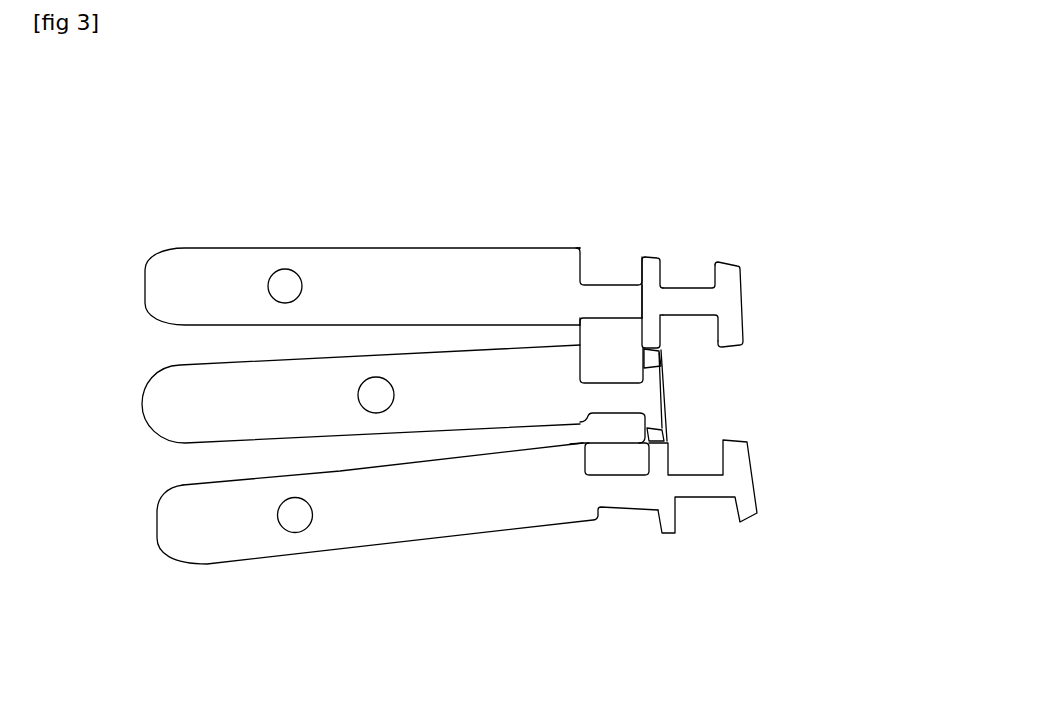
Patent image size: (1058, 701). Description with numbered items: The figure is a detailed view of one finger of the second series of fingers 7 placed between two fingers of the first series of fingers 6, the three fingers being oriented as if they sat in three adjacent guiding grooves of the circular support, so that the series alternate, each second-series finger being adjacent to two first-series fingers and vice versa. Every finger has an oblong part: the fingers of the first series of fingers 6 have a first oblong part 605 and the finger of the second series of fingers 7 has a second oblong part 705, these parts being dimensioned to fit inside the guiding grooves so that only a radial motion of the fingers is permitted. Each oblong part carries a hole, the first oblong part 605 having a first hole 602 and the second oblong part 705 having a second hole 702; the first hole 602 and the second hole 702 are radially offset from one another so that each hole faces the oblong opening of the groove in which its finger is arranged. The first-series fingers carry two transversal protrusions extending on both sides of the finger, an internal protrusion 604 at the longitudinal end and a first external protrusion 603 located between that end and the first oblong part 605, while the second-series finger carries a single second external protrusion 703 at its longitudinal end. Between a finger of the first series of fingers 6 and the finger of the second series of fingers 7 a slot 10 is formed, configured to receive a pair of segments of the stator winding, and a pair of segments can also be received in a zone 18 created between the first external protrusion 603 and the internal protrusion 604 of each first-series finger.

The first oblong part 605 is at (238, 277).
The first hole 602 is at (284, 293).
The second oblong part 705 is at (190, 393).
The second hole 702 is at (377, 392).
The slot 10 is at (605, 334).
The first external protrusion 603 is at (653, 257).
The zone 18 is at (696, 320).
The internal protrusion 604 is at (740, 260).
The first series of fingers 6 is at (758, 294).
The second series of fingers 7 is at (684, 394).
The second external protrusion 703 is at (657, 430).